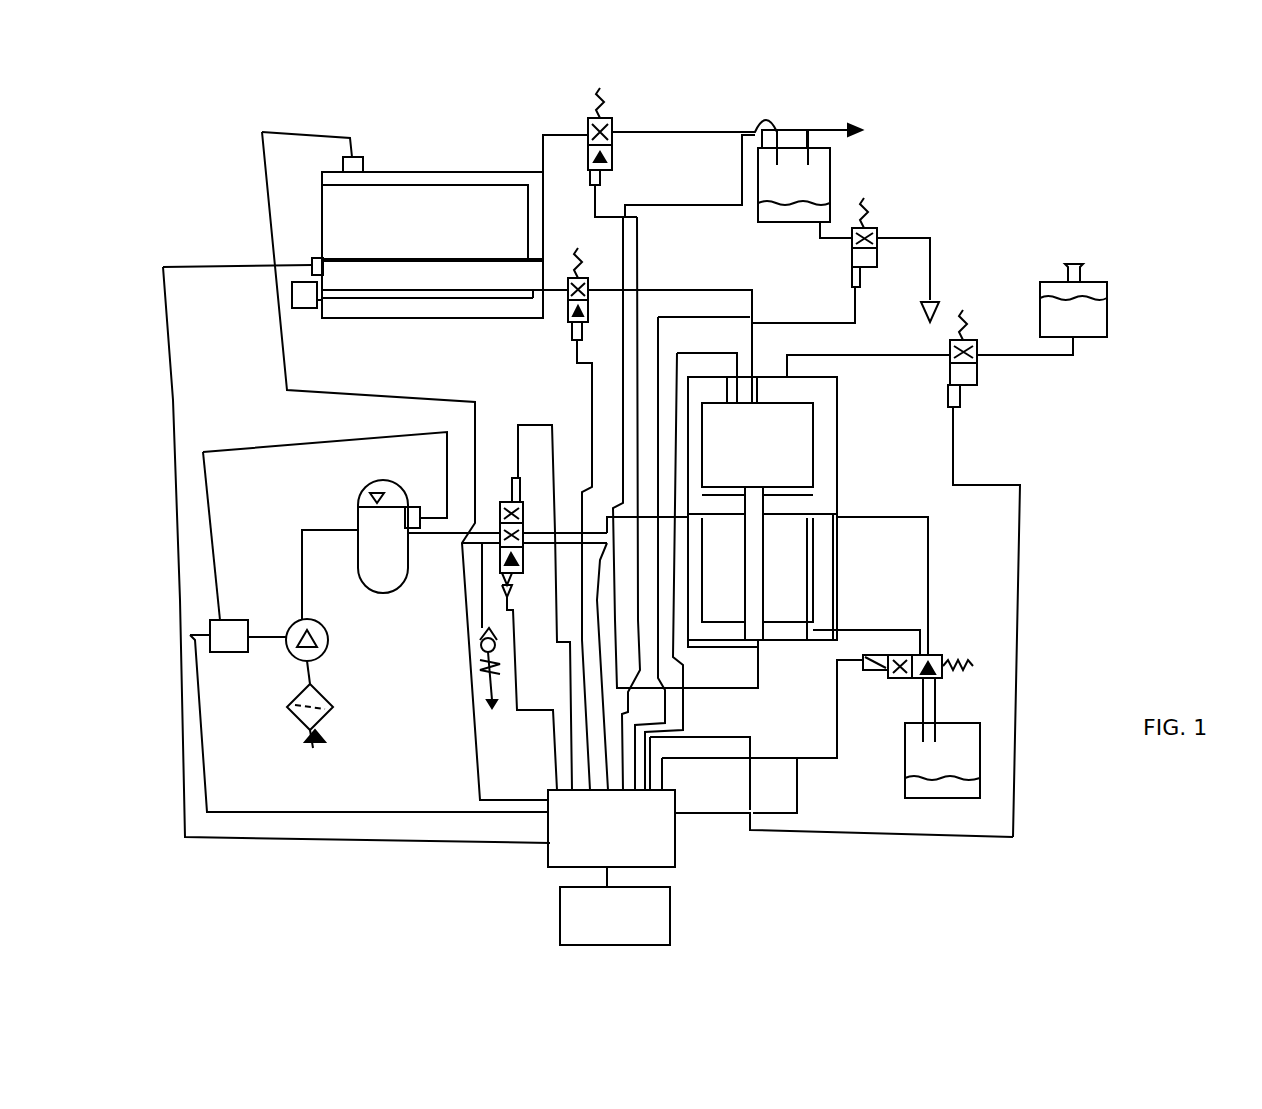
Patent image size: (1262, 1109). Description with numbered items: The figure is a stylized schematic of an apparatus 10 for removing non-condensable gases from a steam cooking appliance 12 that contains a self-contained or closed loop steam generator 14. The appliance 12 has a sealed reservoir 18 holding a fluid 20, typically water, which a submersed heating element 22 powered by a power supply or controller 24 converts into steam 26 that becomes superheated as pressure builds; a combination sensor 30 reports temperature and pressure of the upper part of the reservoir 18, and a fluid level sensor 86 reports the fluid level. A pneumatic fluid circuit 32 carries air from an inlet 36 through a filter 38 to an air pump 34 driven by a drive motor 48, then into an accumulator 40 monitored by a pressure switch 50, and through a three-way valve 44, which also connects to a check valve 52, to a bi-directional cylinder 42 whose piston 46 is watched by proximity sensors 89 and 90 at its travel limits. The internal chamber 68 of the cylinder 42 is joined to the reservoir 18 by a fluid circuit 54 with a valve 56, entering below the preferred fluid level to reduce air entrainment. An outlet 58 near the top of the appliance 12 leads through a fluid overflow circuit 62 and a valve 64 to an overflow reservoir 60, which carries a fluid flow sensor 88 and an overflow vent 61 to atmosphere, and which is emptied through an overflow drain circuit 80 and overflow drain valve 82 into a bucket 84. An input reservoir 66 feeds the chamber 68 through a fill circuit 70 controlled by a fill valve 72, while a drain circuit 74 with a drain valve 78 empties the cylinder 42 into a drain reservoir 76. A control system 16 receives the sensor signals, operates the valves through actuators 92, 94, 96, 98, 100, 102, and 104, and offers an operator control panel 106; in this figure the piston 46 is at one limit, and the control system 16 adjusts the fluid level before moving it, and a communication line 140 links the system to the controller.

The apparatus 10 is at (1052, 100).
The steam cooking appliance 12 is at (447, 160).
The closed loop steam generator 14 is at (413, 318).
The control system 16 is at (718, 866).
The reservoir 18 is at (513, 318).
The fluid 20 is at (338, 305).
The submersed heating element 22 is at (370, 300).
The power supply or controller 24 is at (292, 298).
The steam 26 is at (537, 195).
The combination sensor 30 is at (383, 157).
The fluid circuit 32 is at (310, 567).
The air pump 34 is at (325, 650).
The inlet 36 is at (318, 750).
The filter 38 is at (325, 705).
The accumulator 40 is at (358, 497).
The bi-directional cylinder 42 is at (838, 455).
The three-way valve 44 is at (503, 500).
The piston 46 is at (767, 565).
The drive motor 48 is at (248, 620).
The pressure switch 50 is at (415, 507).
The check valve 52 is at (478, 639).
The fluid circuit 54 is at (693, 290).
The valve 56 is at (590, 278).
The outlet 58 is at (540, 170).
The overflow reservoir 60 is at (832, 172).
The overflow vent 61 is at (832, 128).
The fluid overflow circuit 62 is at (684, 132).
The valve 64 is at (615, 150).
The input reservoir 66 is at (1092, 338).
The internal chamber 68 is at (790, 437).
The fill circuit 70 is at (873, 357).
The fill valve 72 is at (978, 385).
The drain circuit 74 is at (930, 605).
The drain reservoir 76 is at (980, 765).
The drain valve 78 is at (943, 680).
The overflow drain circuit 80 is at (921, 210).
The overflow drain valve 82 is at (852, 258).
The bucket 84 is at (921, 312).
The fluid level sensor 86 is at (315, 258).
The fluid flow sensor 88 is at (792, 148).
The proximity sensor 89 is at (787, 640).
The proximity sensor 90 is at (730, 385).
The actuator 92 is at (510, 585).
The actuator 94 is at (535, 487).
The actuator 96 is at (573, 338).
The actuator 98 is at (602, 178).
The actuator 100 is at (958, 410).
The actuator 102 is at (868, 672).
The actuator 104 is at (850, 280).
The control panel 106 is at (670, 932).
The communication line 140 is at (798, 841).